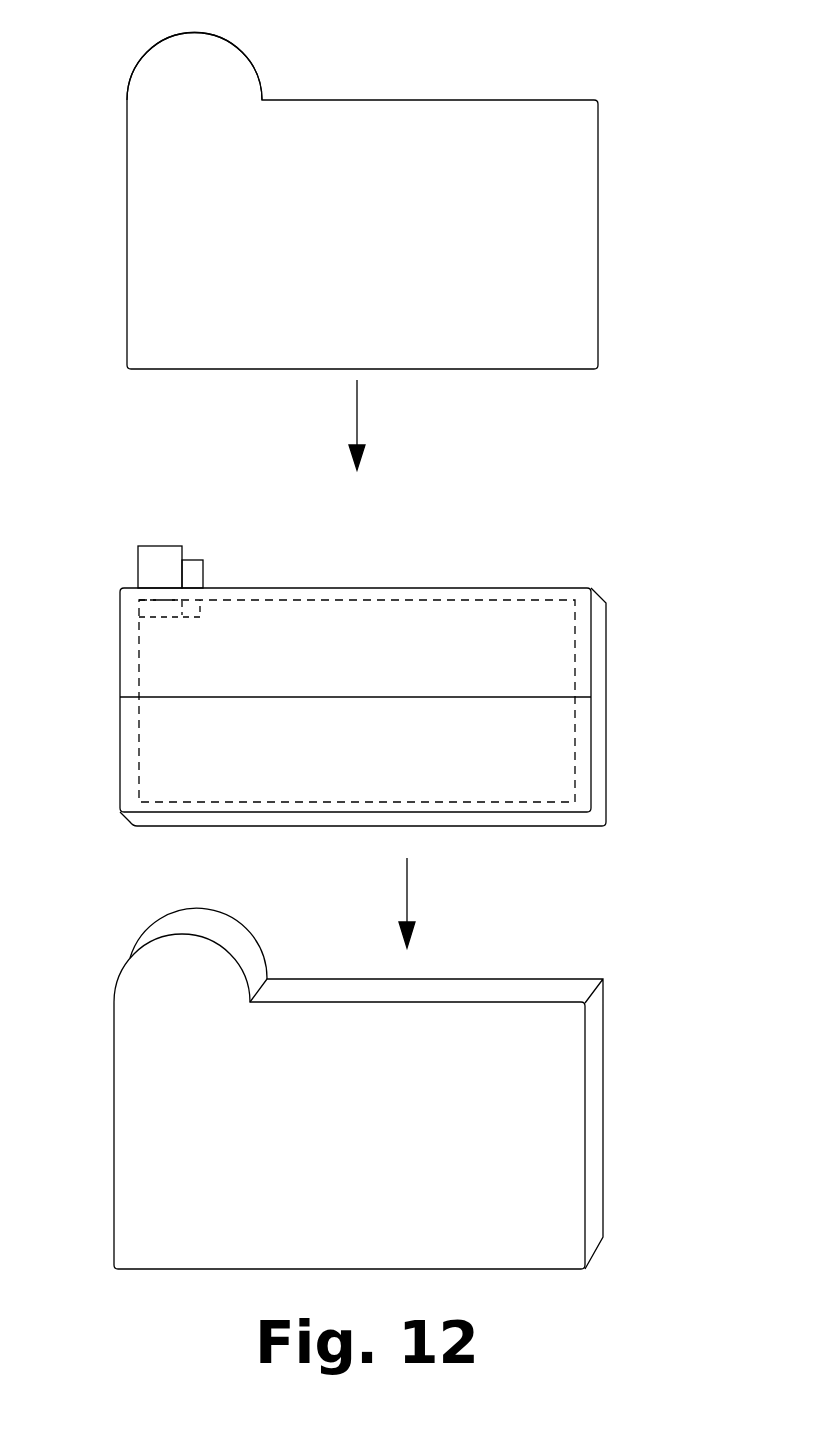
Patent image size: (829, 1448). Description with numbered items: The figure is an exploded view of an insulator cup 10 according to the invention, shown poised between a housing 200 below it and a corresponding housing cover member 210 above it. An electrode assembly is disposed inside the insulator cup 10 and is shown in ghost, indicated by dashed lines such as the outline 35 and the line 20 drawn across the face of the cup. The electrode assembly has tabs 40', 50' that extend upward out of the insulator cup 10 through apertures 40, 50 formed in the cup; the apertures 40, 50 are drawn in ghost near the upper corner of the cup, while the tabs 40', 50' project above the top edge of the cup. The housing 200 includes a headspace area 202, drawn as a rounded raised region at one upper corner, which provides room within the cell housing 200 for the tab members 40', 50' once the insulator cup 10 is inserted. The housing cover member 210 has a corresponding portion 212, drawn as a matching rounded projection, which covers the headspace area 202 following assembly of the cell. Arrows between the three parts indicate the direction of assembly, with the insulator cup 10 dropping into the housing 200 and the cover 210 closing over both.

The insulator cup 10 is at (693, 647).
The electrode stack 20 is at (433, 697).
The cell pouch 35 is at (385, 598).
The aperture 40 is at (136, 647).
The tab 40' is at (220, 549).
The aperture 50 is at (132, 567).
The tab 50' is at (177, 536).
The housing 200 is at (604, 1178).
The headspace area 202 is at (172, 975).
The housing cover member 210 is at (598, 263).
The corresponding portion 212 is at (202, 73).